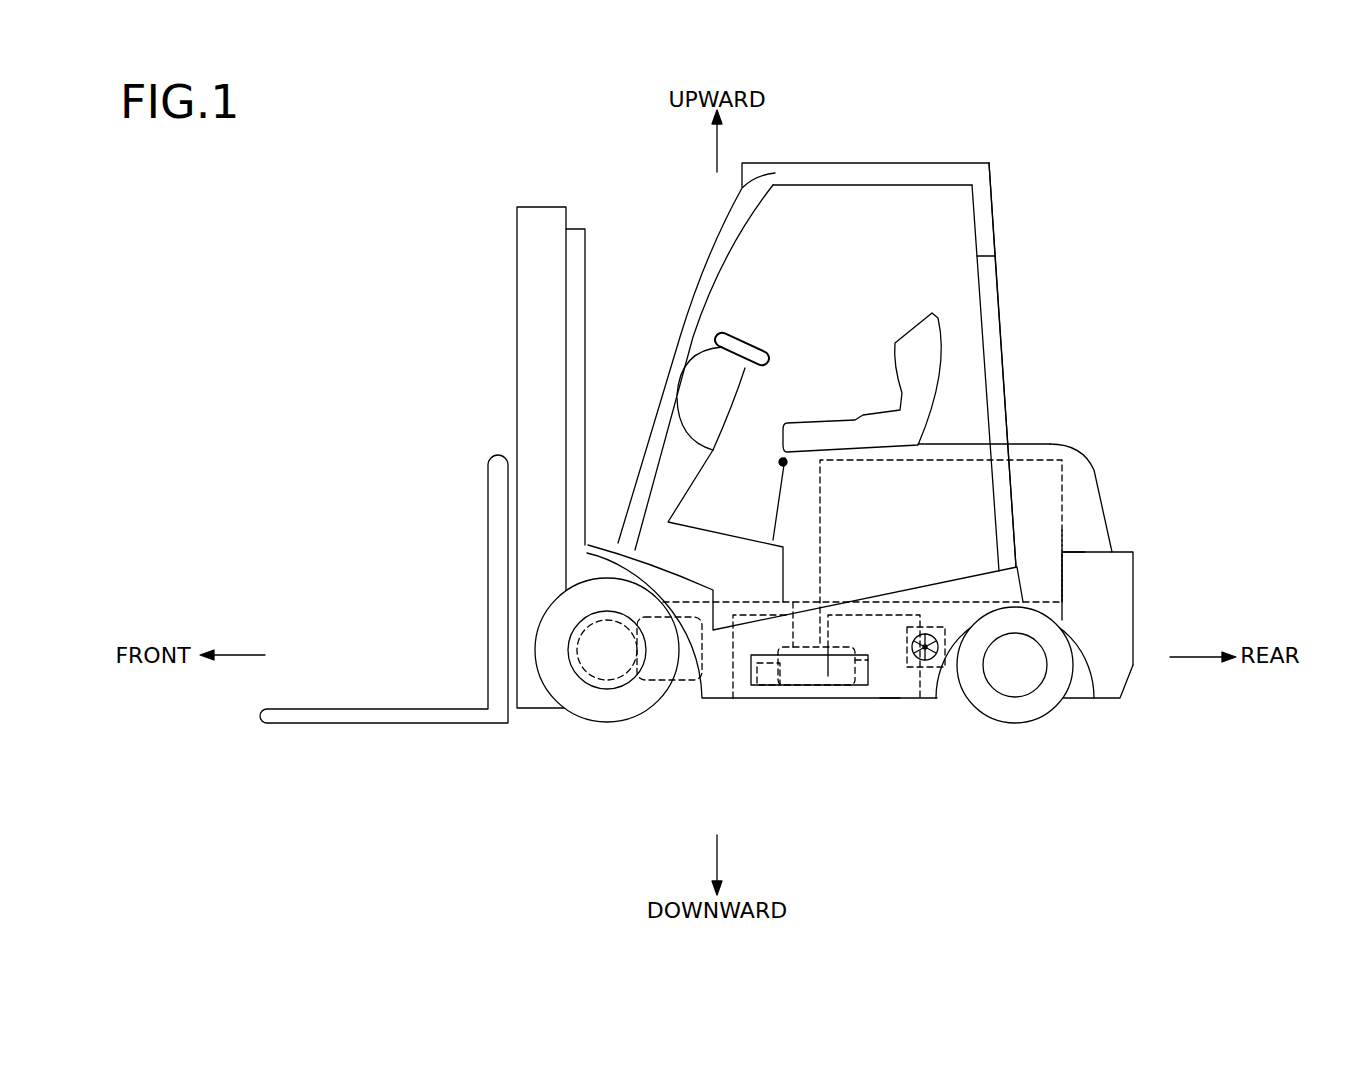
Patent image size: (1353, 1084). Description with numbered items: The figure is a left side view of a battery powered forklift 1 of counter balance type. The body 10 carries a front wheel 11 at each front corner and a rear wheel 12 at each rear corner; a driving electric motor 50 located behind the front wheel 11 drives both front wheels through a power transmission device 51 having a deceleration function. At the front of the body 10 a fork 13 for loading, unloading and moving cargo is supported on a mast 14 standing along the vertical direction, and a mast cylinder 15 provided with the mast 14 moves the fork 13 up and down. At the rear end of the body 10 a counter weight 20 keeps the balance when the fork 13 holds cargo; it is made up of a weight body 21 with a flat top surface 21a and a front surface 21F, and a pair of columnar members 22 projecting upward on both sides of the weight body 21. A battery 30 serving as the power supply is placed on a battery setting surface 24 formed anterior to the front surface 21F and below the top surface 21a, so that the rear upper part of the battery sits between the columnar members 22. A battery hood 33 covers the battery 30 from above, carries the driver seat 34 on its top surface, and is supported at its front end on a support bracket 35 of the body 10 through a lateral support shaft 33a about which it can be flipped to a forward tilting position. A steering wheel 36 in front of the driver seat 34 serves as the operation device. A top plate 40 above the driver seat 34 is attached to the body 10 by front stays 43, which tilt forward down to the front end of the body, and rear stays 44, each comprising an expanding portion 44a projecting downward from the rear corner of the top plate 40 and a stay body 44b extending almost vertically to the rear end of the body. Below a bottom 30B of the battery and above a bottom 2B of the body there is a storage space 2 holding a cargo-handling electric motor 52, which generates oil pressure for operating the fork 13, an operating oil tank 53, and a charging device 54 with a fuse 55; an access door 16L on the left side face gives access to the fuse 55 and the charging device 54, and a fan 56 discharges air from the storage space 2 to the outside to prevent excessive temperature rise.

The battery powered forklift 1 is at (411, 183).
The storage space 2 is at (810, 632).
The bottom of the body 2B is at (893, 700).
The body 10 is at (807, 694).
The front wheel 11 is at (582, 703).
The rear wheel 12 is at (1017, 707).
The fork 13 is at (333, 708).
The mast 14 is at (522, 278).
The mast cylinder 15 is at (577, 278).
The access door 16L is at (828, 676).
The counter weight 20 is at (1199, 467).
The weight body 21 is at (1122, 588).
The top surface of the weight body 21a is at (1085, 552).
The front surface of the weight body 21F is at (1059, 571).
The columnar member 22 is at (1065, 488).
The battery setting surface 24 is at (928, 597).
The battery 30 is at (1067, 463).
The bottom of the battery 30B is at (952, 604).
The battery hood 33 is at (957, 443).
The support shaft 33a is at (785, 458).
The driver seat 34 is at (937, 345).
The support bracket 35 is at (773, 507).
The steering wheel 36 is at (735, 340).
The top plate 40 is at (916, 166).
The front stay 43 is at (722, 222).
The rear stay 44 is at (1084, 197).
The expanding portion 44a is at (985, 215).
The stay body 44b is at (985, 281).
The driving electric motor 50 is at (685, 672).
The power transmission device 51 is at (613, 660).
The cargo-handling electric motor 52 is at (877, 694).
The operating oil tank 53 is at (748, 694).
The charging device 54 is at (790, 690).
The fuse 55 is at (768, 694).
The fan 56 is at (926, 661).